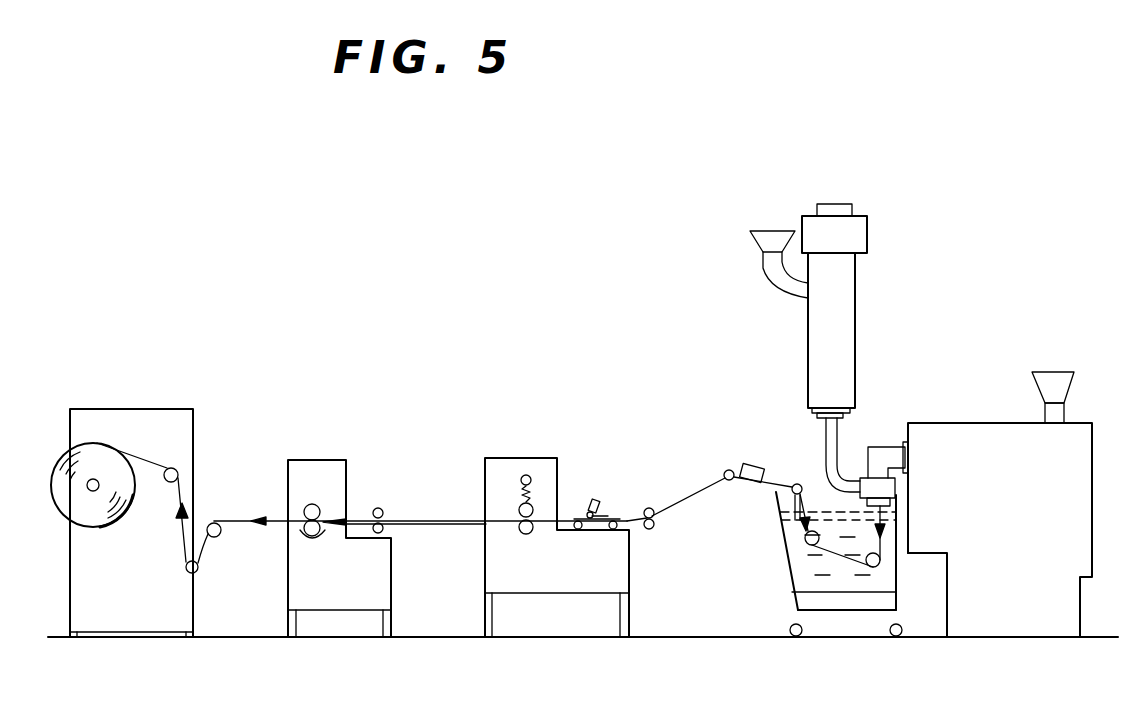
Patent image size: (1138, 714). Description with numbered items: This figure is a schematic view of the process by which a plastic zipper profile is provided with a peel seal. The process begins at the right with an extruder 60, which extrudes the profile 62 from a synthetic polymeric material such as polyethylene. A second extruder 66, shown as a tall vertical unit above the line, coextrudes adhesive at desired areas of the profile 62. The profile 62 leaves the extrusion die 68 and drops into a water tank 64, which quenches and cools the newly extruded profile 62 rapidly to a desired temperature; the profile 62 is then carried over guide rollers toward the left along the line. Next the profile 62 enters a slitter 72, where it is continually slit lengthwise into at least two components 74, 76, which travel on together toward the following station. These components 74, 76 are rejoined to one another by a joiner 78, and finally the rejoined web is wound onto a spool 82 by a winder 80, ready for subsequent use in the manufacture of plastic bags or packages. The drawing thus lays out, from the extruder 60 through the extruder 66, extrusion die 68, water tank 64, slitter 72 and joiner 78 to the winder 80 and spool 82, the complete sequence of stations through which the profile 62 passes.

The extruder 60 is at (985, 432).
The profile 62 is at (628, 518).
The water tank 64 is at (835, 570).
The extruder 66 is at (843, 316).
The extrusion die 68 is at (882, 450).
The slitter 72 is at (510, 462).
The component 74 is at (405, 522).
The component 76 is at (432, 524).
The joiner 78 is at (310, 462).
The winder 80 is at (117, 415).
The spool 82 is at (67, 515).